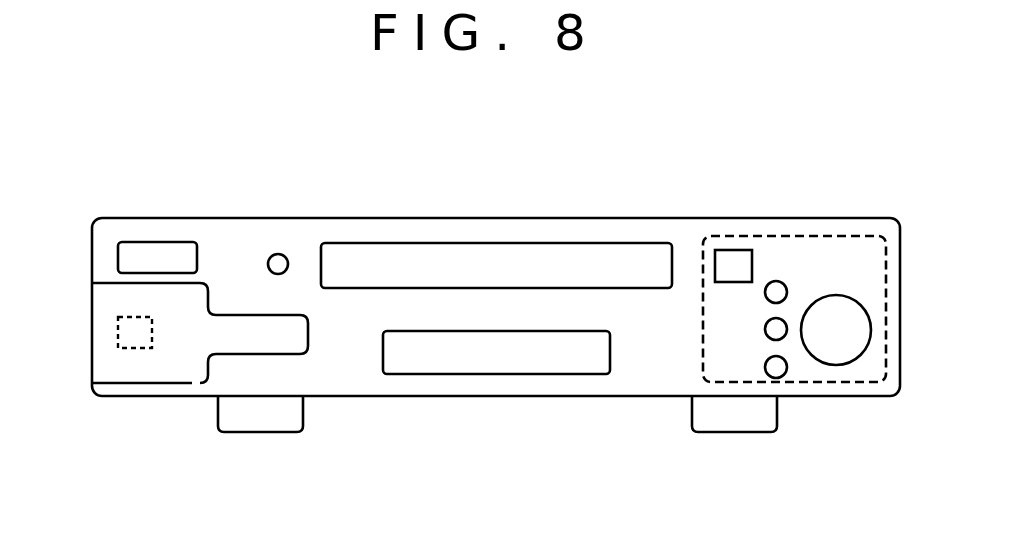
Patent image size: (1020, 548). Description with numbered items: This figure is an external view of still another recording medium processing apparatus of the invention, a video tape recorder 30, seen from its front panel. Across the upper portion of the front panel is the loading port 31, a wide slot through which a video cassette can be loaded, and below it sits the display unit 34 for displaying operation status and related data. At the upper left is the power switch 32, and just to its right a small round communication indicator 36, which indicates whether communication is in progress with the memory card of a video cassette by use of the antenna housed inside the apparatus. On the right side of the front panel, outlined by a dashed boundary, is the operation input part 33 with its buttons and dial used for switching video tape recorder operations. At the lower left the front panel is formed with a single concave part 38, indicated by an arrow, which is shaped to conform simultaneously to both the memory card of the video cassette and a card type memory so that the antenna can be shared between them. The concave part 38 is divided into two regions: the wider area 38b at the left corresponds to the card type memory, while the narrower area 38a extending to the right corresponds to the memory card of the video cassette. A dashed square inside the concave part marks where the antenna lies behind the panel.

The video tape recorder 30 is at (408, 112).
The loading port 31 is at (503, 267).
The power switch 32 is at (138, 242).
The operation input part 33 is at (777, 234).
The display unit 34 is at (563, 362).
The communication indicator 36 is at (270, 255).
The concave part 38 is at (214, 400).
The area of the concave part 38a is at (292, 342).
The area of the concave part 38b is at (175, 362).